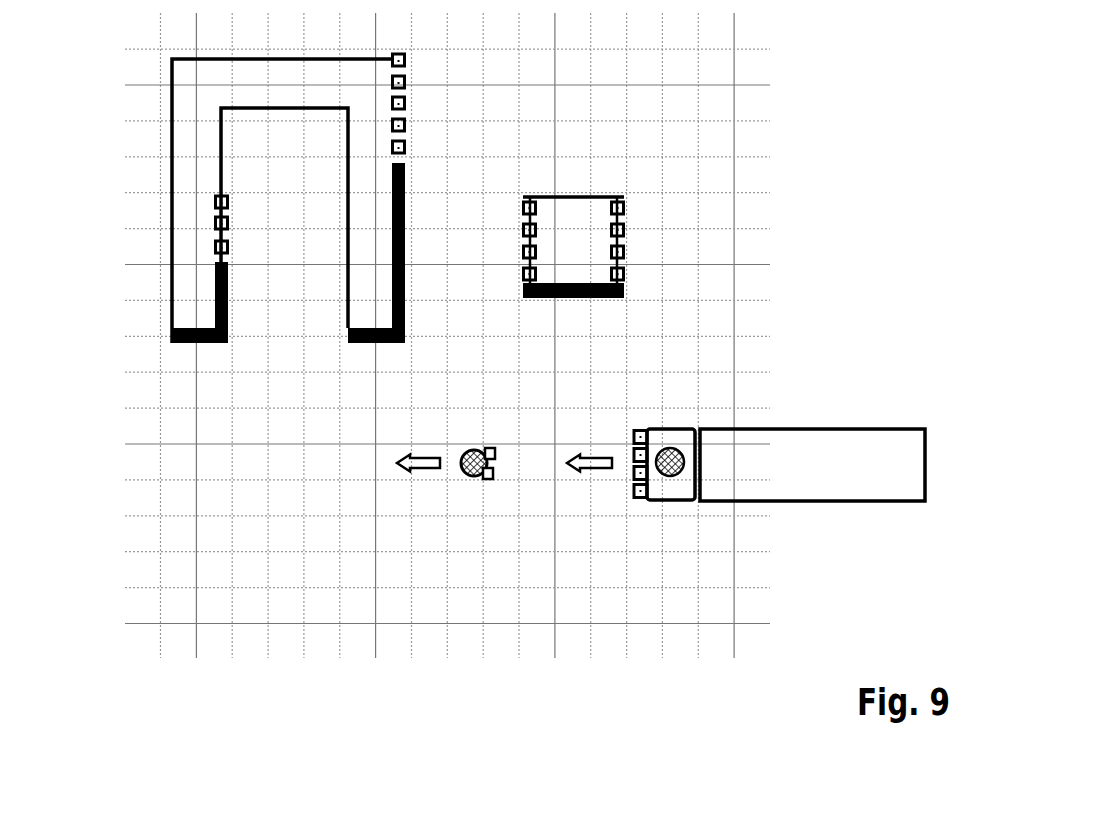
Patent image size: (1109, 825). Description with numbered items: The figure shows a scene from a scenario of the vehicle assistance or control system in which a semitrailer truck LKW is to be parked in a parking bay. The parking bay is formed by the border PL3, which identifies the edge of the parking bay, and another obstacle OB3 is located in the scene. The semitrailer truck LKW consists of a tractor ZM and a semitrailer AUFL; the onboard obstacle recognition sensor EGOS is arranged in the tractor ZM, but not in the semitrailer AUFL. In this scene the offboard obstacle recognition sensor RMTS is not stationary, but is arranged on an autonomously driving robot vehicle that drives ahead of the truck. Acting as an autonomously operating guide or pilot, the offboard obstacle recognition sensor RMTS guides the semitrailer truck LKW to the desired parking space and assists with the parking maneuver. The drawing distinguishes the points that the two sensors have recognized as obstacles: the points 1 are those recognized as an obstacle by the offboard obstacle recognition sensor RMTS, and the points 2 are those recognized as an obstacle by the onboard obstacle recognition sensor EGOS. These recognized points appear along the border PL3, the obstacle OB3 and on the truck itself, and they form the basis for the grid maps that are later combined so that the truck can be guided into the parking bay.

The edge of a parking bay PL3 is at (185, 96).
The obstacle OB3 is at (583, 237).
The semitrailer truck LKW is at (860, 368).
The tractor ZM is at (678, 443).
The semitrailer AUFL is at (885, 493).
The onboard obstacle recognition sensor EGOS is at (668, 472).
The offboard obstacle recognition sensor RMTS is at (477, 482).
The points recognized by the offboard obstacle recognition sensor 1 is at (485, 482).
The points recognized by the onboard obstacle recognition sensor 2 is at (637, 495).